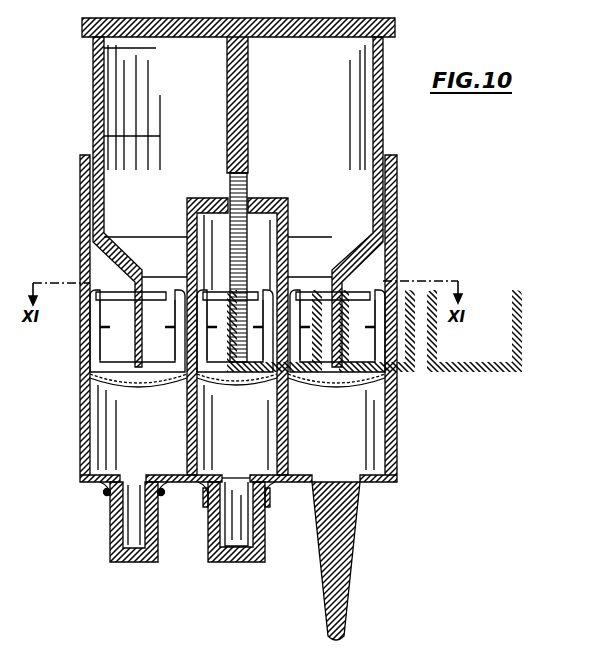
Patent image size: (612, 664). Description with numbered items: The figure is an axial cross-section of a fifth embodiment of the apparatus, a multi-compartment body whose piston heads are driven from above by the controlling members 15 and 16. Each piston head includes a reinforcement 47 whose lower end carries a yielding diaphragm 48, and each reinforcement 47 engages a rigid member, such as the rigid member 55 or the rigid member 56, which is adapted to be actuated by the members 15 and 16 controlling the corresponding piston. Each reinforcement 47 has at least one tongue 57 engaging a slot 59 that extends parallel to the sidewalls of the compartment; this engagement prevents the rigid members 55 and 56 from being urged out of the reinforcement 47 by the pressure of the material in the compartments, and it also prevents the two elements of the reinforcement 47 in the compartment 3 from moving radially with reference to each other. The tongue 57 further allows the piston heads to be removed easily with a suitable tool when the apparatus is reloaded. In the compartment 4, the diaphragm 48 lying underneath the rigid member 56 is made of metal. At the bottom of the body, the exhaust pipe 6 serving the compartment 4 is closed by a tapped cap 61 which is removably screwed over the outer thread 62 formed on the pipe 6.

The controlling member 16 is at (243, 86).
The controlling member 15 is at (378, 90).
The slot 59 is at (90, 322).
The tongue 57 is at (90, 342).
The reinforcement 47 is at (90, 366).
The yielding diaphragm 48 is at (90, 388).
The rigid member 55 is at (306, 332).
The rigid member 56 is at (306, 332).
The compartment 4 is at (241, 452).
The compartment 3 is at (306, 332).
The outer thread 62 is at (270, 494).
The tapped cap 61 is at (262, 528).
The exhaust pipe 6 is at (216, 540).